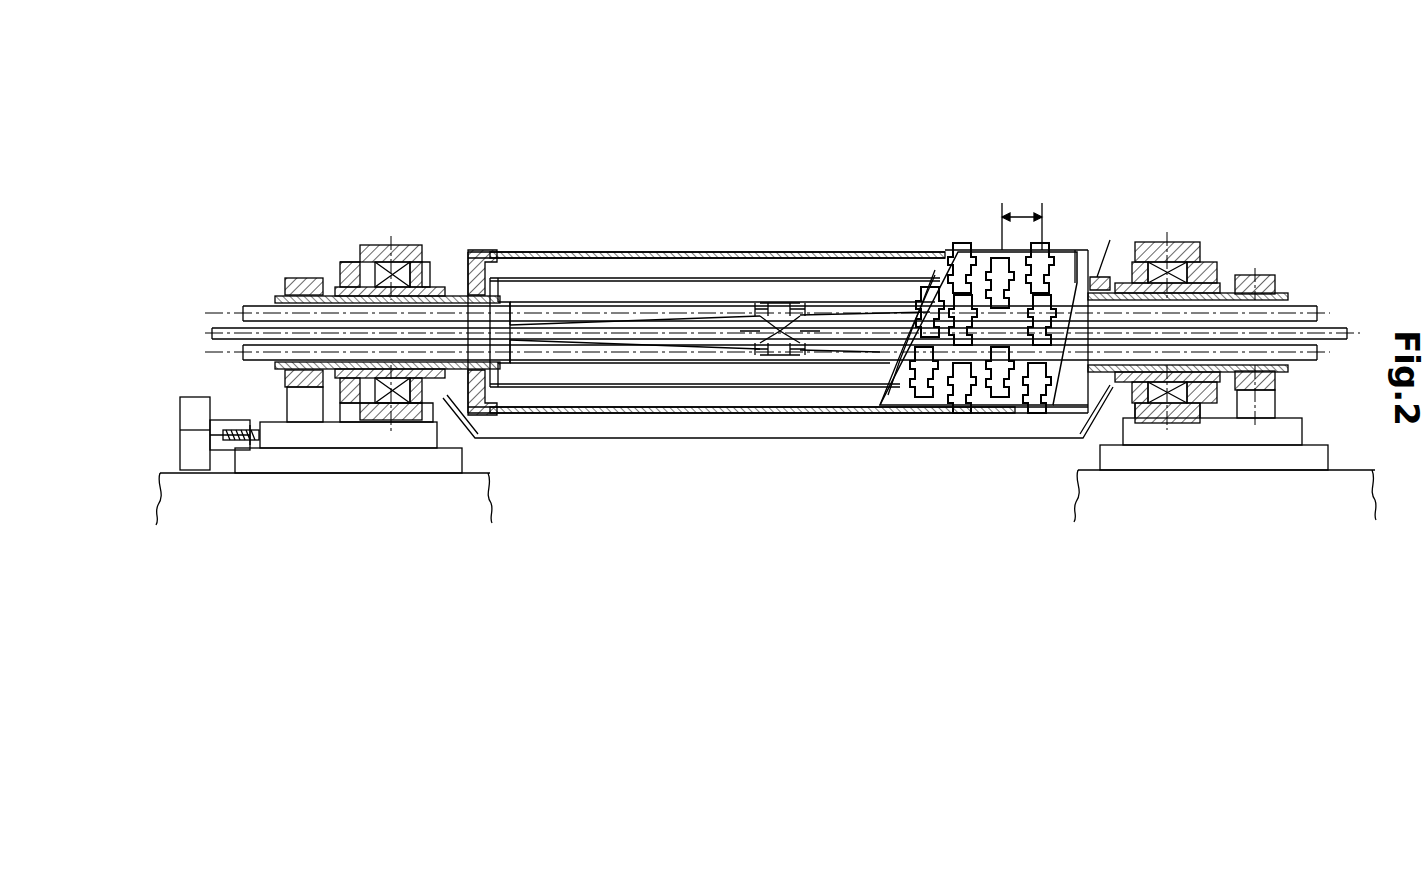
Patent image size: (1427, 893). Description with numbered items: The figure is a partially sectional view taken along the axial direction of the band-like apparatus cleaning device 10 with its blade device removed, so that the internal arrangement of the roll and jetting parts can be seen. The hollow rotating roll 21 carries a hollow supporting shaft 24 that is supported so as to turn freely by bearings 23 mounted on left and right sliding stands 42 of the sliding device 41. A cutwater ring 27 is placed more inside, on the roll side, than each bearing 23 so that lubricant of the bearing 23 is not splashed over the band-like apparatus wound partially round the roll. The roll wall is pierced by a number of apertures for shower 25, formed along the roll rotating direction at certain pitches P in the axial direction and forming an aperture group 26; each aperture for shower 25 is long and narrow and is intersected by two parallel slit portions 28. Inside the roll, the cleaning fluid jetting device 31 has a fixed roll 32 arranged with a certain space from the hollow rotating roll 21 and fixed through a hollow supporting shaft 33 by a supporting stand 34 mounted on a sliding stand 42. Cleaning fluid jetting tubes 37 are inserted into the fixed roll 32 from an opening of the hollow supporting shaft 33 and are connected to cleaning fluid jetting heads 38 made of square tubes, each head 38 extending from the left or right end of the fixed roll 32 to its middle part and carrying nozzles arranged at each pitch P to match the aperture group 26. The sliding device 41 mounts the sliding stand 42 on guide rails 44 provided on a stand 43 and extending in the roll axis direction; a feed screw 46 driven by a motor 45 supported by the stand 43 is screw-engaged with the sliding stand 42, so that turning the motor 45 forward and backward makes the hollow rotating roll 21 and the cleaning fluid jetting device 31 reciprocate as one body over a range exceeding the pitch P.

The band-like apparatus cleaning device 10 is at (965, 192).
The hollow rotating roll 21 is at (610, 245).
The bearing 23 is at (381, 247).
The hollow supporting shaft 24 is at (440, 283).
The aperture for shower 25 is at (993, 407).
The aperture group 26 is at (930, 402).
The cutwater ring 27 is at (452, 286).
The slit portion 28 is at (1035, 405).
The cleaning fluid jetting device 31 is at (560, 292).
The fixed roll 32 is at (758, 291).
The hollow supporting shaft 33 is at (331, 283).
The supporting stand 34 is at (298, 278).
The cleaning fluid jetting tube 37 is at (288, 302).
The cleaning fluid jetting head 38 is at (667, 307).
The sliding device 41 is at (195, 386).
The sliding stand 42 is at (276, 422).
The stand 43 is at (178, 455).
The guide rail 44 is at (427, 455).
The motor 45 is at (188, 398).
The feed screw 46 is at (230, 440).
The pitch P is at (1019, 215).